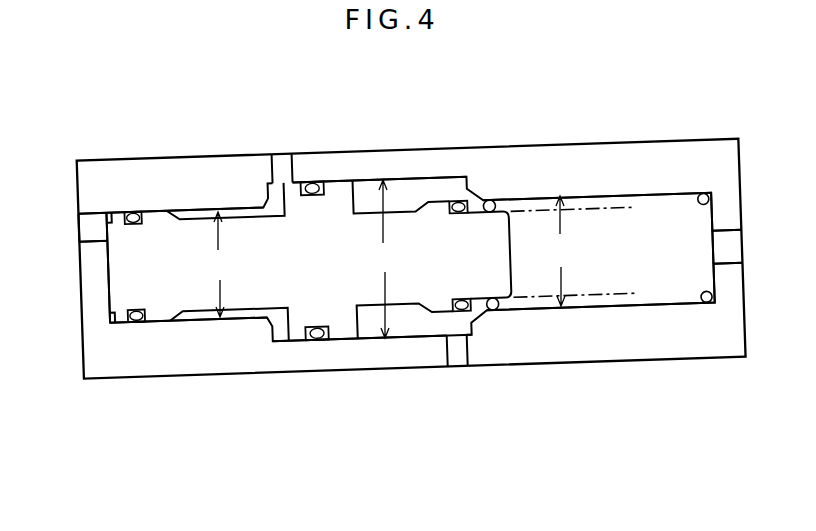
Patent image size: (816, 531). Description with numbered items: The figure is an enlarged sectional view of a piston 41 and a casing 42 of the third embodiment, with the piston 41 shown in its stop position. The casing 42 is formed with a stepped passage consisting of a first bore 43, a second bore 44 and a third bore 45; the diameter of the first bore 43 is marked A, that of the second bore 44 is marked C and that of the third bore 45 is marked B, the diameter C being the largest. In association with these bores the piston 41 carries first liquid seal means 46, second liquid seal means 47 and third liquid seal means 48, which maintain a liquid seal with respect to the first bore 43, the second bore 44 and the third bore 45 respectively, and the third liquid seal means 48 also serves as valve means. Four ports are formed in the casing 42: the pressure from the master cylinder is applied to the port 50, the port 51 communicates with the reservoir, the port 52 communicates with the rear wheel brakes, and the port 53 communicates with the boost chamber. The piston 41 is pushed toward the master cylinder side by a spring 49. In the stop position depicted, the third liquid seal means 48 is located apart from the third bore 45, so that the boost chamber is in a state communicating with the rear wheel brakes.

The piston 41 is at (260, 292).
The casing 42 is at (160, 363).
The first bore 43 is at (183, 208).
The second bore 44 is at (407, 177).
The third bore 45 is at (533, 193).
The first liquid seal means 46 is at (138, 210).
The second liquid seal means 47 is at (317, 180).
The third liquid seal means 48 is at (457, 200).
The spring 49 is at (633, 207).
The port 50 is at (84, 231).
The port 51 is at (281, 163).
The port 52 is at (462, 353).
The port 53 is at (727, 250).
The diameter of the first bore A is at (219, 264).
The diameter of the third bore B is at (561, 251).
The diameter of the second bore C is at (384, 259).